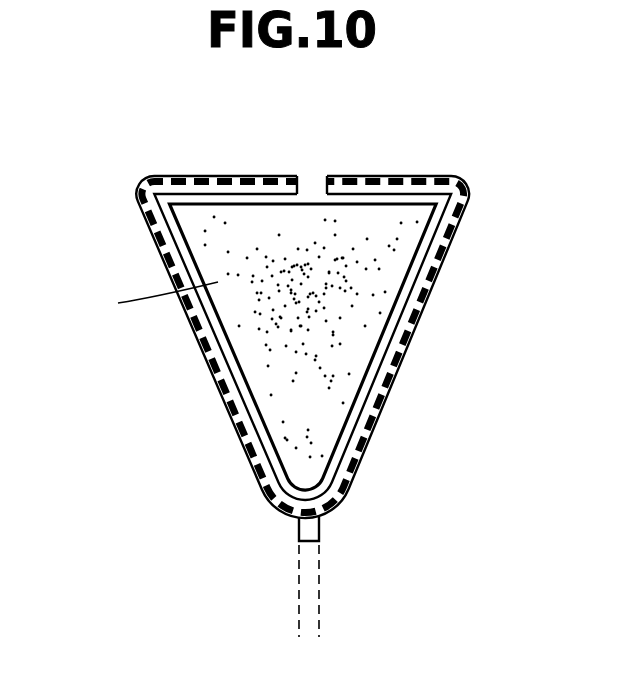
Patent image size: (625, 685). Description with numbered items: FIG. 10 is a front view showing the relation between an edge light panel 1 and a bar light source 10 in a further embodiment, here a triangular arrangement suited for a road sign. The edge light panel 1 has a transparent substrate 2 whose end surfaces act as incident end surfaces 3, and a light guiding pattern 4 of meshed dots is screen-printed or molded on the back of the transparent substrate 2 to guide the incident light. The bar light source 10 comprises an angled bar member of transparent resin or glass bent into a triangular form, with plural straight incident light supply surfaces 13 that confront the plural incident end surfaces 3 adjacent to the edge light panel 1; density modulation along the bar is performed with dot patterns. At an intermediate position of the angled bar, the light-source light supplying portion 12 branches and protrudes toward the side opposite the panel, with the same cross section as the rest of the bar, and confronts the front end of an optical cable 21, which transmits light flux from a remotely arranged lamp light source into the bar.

The edge light panel 1 is at (88, 286).
The transparent substrate 2 is at (158, 299).
The incident end surface 3 is at (367, 205).
The light guiding pattern 4 is at (300, 307).
The bar light source 10 is at (357, 466).
The light-source light supplying portion 12 is at (299, 548).
The incident light supply surface 13 is at (256, 198).
The optical cable 21 is at (322, 614).